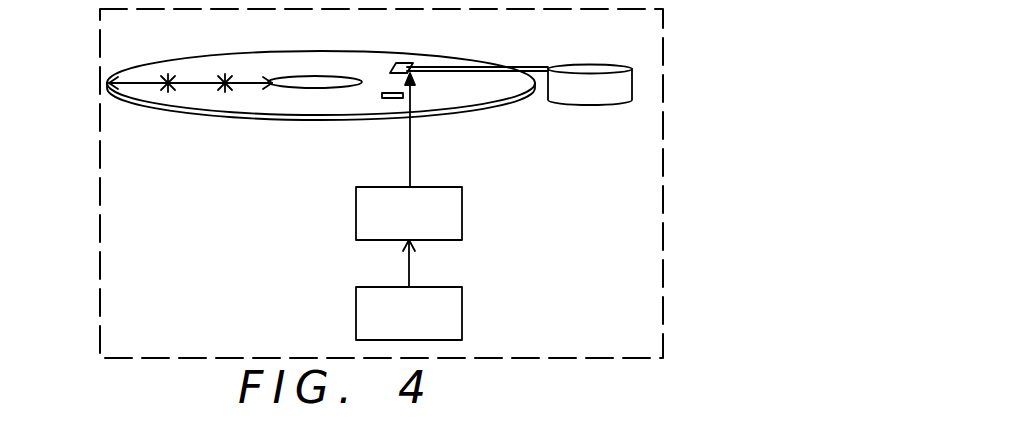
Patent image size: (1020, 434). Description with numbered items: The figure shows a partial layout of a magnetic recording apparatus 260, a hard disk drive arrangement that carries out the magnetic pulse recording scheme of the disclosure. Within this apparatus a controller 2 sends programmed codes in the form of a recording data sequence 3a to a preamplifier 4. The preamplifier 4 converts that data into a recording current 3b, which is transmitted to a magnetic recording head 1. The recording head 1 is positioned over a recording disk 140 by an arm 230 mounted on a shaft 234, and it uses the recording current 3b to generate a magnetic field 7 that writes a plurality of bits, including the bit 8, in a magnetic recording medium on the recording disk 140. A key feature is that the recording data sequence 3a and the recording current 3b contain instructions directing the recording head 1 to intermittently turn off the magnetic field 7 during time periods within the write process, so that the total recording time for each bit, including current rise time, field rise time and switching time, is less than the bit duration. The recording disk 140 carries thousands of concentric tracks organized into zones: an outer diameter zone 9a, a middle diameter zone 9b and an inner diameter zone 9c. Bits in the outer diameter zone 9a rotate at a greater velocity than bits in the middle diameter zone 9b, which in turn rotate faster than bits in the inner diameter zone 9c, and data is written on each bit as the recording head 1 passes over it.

The recording disk 140 is at (232, 51).
The outer diameter (OD) zone 9a is at (134, 84).
The middle diameter (MD) zone 9b is at (197, 84).
The inner diameter (ID) zone 9c is at (247, 84).
The magnetic recording head 1 is at (405, 63).
The magnetic field 7 is at (394, 88).
The bit 8 is at (391, 99).
The arm 230 is at (533, 65).
The shaft 234 is at (613, 66).
The recording current 3b is at (412, 139).
The preamplifier (preamp) 4 is at (452, 213).
The recording data sequence 3a is at (411, 259).
The controller 2 is at (452, 313).
The magnetic recording apparatus 260 is at (246, 216).